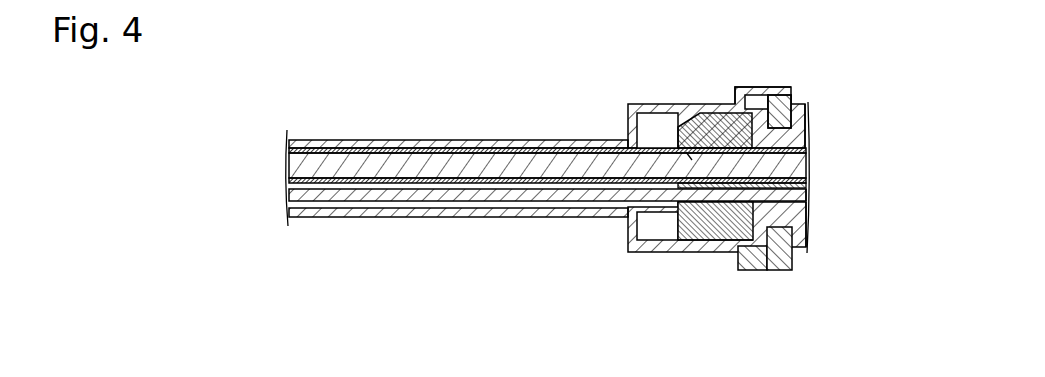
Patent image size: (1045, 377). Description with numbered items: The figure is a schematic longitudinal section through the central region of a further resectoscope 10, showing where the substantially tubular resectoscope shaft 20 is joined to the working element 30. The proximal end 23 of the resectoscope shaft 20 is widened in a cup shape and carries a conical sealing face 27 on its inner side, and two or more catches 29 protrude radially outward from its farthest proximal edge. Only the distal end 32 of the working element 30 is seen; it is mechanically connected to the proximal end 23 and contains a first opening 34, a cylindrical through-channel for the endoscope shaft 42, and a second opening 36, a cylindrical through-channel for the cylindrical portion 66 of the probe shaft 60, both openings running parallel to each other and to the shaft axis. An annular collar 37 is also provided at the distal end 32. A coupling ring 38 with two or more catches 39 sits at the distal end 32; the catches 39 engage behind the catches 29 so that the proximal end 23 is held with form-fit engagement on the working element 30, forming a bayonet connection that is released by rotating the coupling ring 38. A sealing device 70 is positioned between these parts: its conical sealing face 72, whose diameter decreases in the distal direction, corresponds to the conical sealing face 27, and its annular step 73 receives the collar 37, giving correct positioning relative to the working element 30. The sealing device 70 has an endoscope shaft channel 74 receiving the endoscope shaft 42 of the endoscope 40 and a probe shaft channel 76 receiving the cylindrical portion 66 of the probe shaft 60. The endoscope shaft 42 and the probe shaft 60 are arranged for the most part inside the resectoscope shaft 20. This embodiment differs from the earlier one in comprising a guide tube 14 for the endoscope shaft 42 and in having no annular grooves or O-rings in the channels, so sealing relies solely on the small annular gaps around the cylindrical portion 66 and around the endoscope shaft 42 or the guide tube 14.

The resectoscope 10 is at (334, 57).
The guide tube 14 is at (495, 156).
The resectoscope shaft 20 is at (434, 140).
The proximal end of the resectoscope shaft 23 is at (678, 113).
The conical sealing face 27 is at (682, 133).
The catches 29 is at (760, 97).
The working element 30 is at (803, 140).
The distal end of the working element 32 is at (795, 228).
The first opening 34 is at (808, 190).
The second opening 36 is at (800, 215).
The annular collar 37 is at (772, 256).
The coupling ring 38 is at (793, 105).
The catches 39 is at (745, 102).
The endoscope 40 is at (547, 240).
The endoscope shaft 42 is at (345, 179).
The probe shaft 60 is at (547, 245).
The cylindrical portion 66 is at (468, 201).
The sealing device 70 is at (715, 242).
The conical sealing face 72 is at (692, 242).
The annular step 73 is at (752, 247).
The endoscope shaft channel 74 is at (688, 160).
The probe shaft channel 76 is at (680, 188).